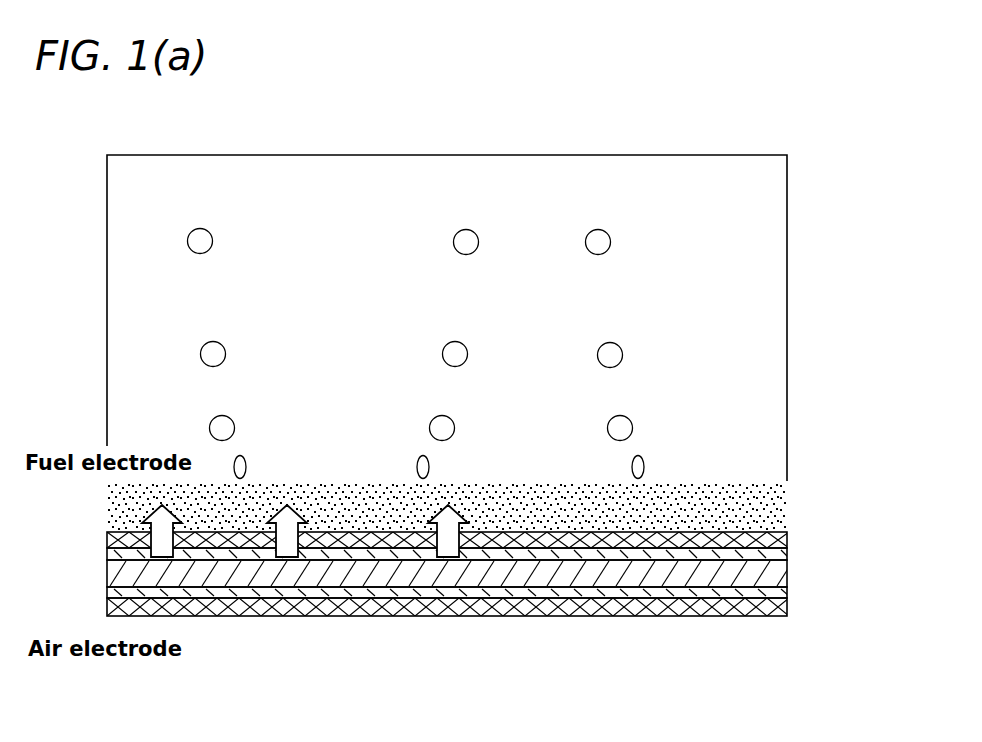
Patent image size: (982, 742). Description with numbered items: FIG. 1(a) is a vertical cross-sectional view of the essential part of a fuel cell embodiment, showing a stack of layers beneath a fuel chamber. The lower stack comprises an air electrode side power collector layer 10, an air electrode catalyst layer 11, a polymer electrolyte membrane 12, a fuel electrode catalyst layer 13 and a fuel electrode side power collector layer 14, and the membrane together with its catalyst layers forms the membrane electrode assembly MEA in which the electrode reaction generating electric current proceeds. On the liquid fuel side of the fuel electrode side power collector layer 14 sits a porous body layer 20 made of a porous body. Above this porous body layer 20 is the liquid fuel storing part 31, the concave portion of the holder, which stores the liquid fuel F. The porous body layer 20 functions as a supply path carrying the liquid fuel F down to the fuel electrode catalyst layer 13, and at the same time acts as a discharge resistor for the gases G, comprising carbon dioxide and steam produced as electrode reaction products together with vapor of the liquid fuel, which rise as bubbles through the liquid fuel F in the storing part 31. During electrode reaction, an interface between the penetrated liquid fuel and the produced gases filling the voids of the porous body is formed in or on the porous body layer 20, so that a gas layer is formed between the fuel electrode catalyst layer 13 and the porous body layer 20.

The liquid fuel storing part 31 is at (787, 297).
The liquid fuel F is at (675, 170).
The gases G is at (633, 427).
The porous body layer 20 is at (775, 492).
The fuel electrode side power collector layer 14 is at (783, 535).
The fuel electrode catalyst layer 13 is at (780, 555).
The polymer electrolyte membrane 12 is at (778, 575).
The air electrode catalyst layer 11 is at (778, 596).
The air electrode side power collector layer 10 is at (785, 612).
The membrane electrode assembly MEA is at (847, 520).